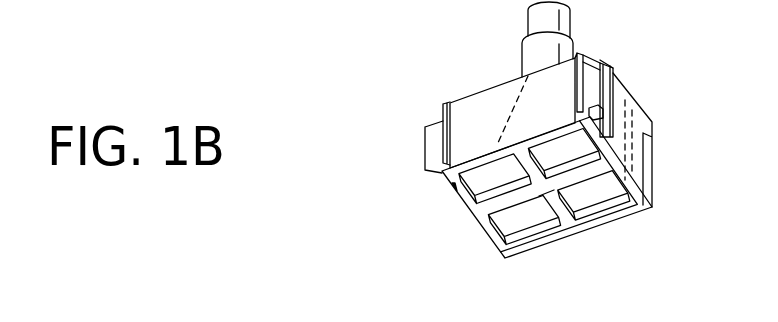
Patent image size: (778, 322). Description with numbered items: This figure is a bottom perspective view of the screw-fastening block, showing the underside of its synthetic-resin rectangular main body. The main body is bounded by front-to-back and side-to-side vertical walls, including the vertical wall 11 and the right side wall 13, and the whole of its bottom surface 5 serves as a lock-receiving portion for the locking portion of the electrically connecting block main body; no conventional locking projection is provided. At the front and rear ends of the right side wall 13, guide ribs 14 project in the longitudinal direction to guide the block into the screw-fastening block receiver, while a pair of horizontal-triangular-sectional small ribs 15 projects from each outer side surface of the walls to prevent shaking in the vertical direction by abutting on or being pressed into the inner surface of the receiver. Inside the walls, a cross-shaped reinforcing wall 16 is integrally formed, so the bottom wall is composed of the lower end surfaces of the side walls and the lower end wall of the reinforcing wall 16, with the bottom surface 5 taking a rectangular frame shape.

The vertical wall 11 is at (623, 122).
The right side wall 13 is at (483, 108).
The guide rib 14 is at (425, 153).
The small rib 15 is at (442, 110).
The bottom surface 5 is at (488, 225).
The reinforcing wall 16 is at (543, 195).